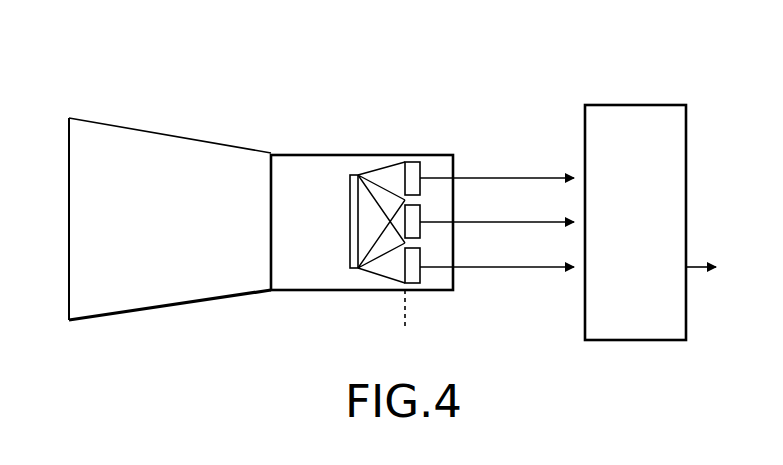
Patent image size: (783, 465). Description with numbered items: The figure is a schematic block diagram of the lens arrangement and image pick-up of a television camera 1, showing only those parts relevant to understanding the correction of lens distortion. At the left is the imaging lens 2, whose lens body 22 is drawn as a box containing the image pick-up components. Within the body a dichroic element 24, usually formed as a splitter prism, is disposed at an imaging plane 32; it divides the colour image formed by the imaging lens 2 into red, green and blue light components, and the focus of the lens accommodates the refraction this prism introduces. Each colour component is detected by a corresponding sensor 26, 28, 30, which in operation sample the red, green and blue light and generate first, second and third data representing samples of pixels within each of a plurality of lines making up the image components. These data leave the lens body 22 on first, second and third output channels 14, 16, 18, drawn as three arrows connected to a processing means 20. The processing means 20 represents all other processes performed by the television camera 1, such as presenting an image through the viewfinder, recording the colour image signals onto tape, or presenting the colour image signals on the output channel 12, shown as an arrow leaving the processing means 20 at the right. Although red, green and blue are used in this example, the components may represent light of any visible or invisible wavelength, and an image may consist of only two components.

The television camera 1 is at (296, 314).
The imaging lens 2 is at (153, 131).
The output channel 12 is at (722, 273).
The first output channel 14 is at (548, 176).
The second output channel 16 is at (507, 222).
The third output channel 18 is at (545, 269).
The processing means 20 is at (620, 140).
The lens body 22 is at (306, 188).
The dichroic element 24 is at (357, 174).
The sensor 26 is at (417, 161).
The sensor 28 is at (421, 232).
The sensor 30 is at (421, 278).
The imaging plane 32 is at (404, 313).